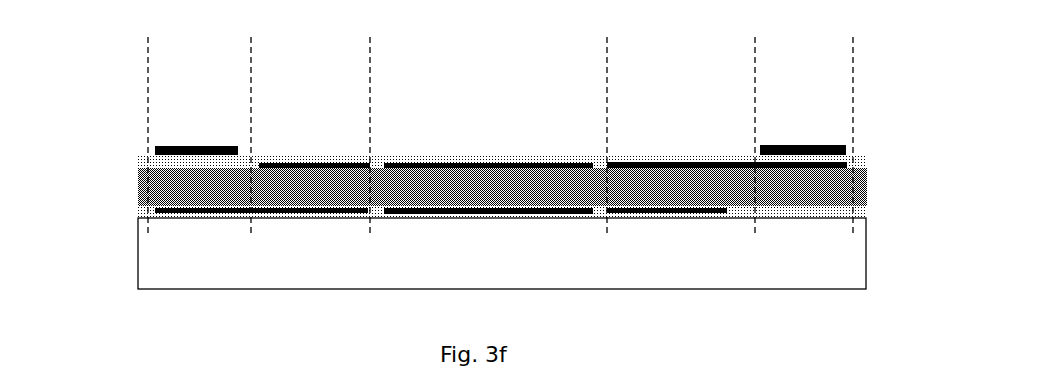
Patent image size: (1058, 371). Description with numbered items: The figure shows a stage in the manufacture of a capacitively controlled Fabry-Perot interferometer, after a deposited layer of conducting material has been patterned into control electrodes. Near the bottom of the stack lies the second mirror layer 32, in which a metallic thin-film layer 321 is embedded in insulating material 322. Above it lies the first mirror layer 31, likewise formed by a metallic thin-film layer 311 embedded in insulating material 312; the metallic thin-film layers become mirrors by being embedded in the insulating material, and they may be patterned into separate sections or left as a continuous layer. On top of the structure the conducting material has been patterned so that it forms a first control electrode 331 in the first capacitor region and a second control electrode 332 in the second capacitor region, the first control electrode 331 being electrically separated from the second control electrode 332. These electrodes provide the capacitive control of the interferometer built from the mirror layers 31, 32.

The first mirror layer 31 is at (501, 175).
The second mirror layer 32 is at (132, 210).
The metallic thin-film layer of the first mirror layer 311 is at (307, 162).
The insulating material of the first mirror layer 312 is at (478, 158).
The metallic thin-film layer of the second mirror layer 321 is at (295, 213).
The insulating material of the second mirror layer 322 is at (870, 210).
The first control electrode 331 is at (205, 143).
The second control electrode 332 is at (813, 143).